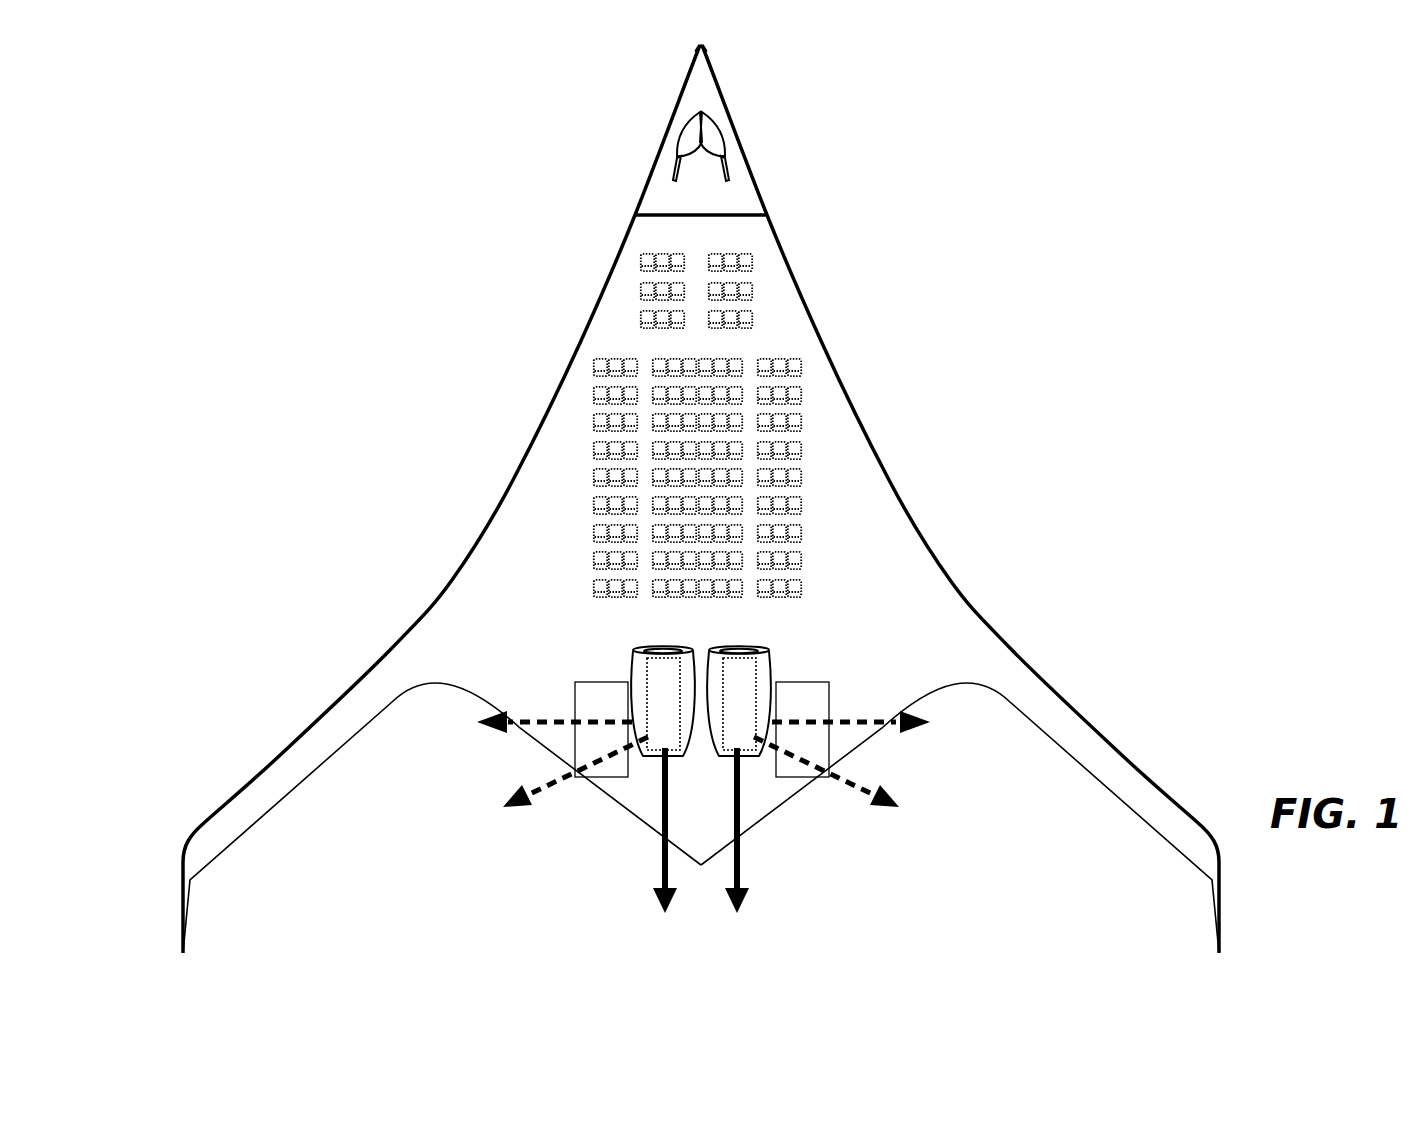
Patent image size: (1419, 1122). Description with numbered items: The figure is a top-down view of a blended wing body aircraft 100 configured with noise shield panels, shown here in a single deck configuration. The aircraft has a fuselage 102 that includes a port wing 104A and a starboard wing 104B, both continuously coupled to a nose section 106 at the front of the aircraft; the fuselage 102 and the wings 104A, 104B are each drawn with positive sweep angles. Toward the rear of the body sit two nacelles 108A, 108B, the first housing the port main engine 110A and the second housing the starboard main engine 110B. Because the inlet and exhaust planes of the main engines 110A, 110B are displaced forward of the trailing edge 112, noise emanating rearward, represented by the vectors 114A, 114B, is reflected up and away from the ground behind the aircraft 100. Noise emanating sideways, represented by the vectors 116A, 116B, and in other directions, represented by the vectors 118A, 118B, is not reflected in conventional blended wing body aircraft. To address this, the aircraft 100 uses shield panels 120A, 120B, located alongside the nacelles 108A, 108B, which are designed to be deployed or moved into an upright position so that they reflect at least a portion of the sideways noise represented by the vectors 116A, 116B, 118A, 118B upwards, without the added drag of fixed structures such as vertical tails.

The BWB aircraft 100 is at (428, 215).
The fuselage 102 is at (895, 392).
The port wing 104A is at (292, 773).
The starboard wing 104B is at (1088, 745).
The nose section 106 is at (695, 95).
The nacelle 108A is at (642, 648).
The nacelle 108B is at (762, 647).
The port main engine 110A is at (665, 677).
The starboard main engine 110B is at (740, 675).
The trailing edge 112 is at (770, 828).
The vector 114A is at (661, 847).
The vector 114B is at (738, 847).
The vector 116A is at (524, 722).
The vector 116B is at (877, 722).
The vector 118A is at (546, 779).
The vector 118B is at (855, 779).
The shield panel 120A is at (600, 777).
The shield panel 120B is at (802, 777).